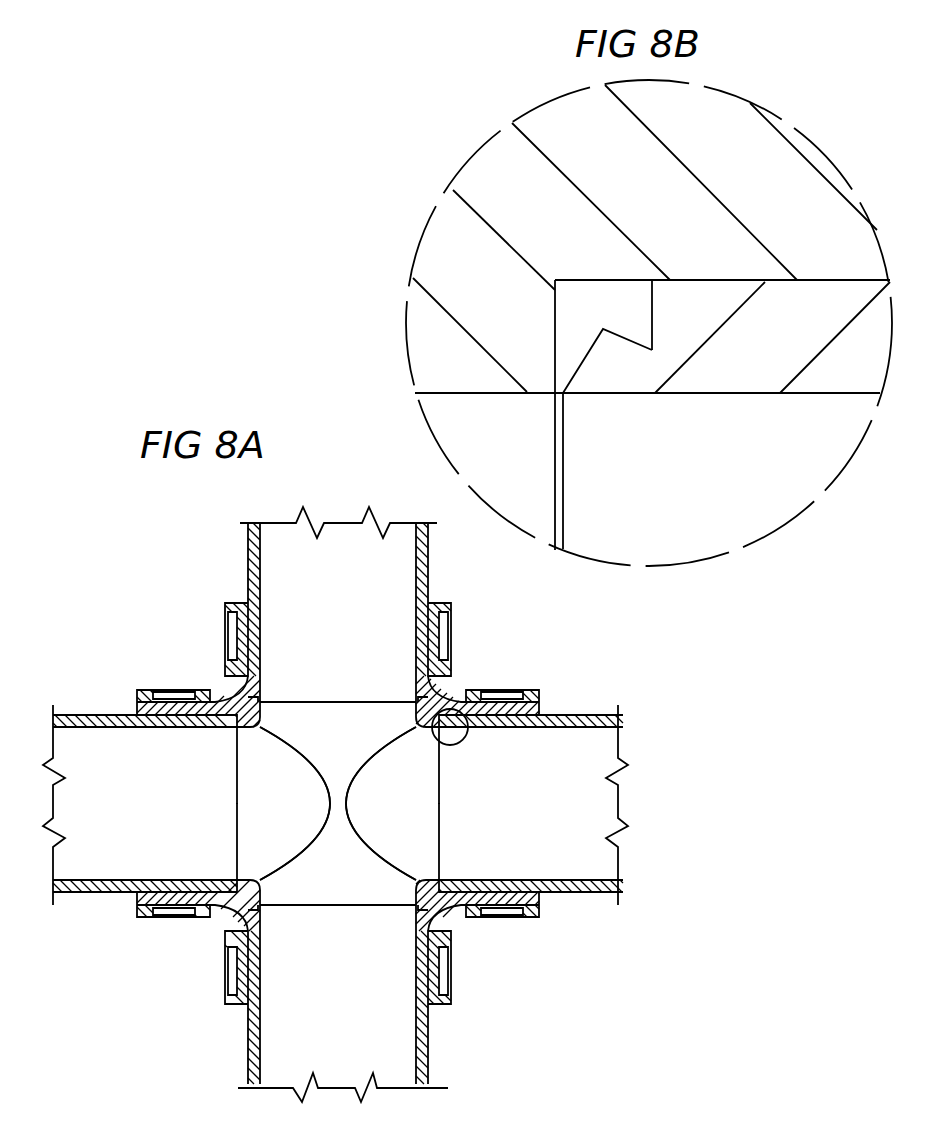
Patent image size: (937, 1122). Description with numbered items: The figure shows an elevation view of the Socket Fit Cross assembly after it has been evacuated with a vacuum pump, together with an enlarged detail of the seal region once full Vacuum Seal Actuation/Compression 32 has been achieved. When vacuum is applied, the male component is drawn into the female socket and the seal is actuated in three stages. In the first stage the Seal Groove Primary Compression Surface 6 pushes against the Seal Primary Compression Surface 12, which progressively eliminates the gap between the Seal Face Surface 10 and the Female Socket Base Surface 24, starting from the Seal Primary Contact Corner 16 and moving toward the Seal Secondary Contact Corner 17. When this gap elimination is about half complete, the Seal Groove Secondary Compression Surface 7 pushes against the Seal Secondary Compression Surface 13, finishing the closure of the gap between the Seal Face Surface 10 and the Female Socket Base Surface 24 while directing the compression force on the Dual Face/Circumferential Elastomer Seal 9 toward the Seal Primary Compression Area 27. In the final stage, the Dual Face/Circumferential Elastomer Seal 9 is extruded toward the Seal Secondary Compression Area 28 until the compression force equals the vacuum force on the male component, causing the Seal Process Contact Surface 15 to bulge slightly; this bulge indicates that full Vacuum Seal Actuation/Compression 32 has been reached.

The Seal Groove Primary Compression Surface 6 is at (650, 312).
The Seal Groove Secondary Compression Surface 7 is at (563, 393).
The Dual Face/Circumferential Elastomer Seal 9 is at (637, 302).
The Seal Face Surface 10 is at (555, 332).
The Seal Primary Compression Surface 12 is at (653, 303).
The Seal Secondary Compression Surface 13 is at (555, 371).
The Seal Process Contact Surface 15 is at (555, 527).
The Seal Primary Contact Corner 16 is at (552, 287).
The Seal Secondary Contact Corner 17 is at (555, 395).
The Female Socket Base Surface 24 is at (555, 353).
The Seal Primary Compression Area 27 is at (560, 280).
The Seal Secondary Compression Area 28 is at (563, 394).
The Vacuum Seal Actuation/Compression 32 is at (593, 313).